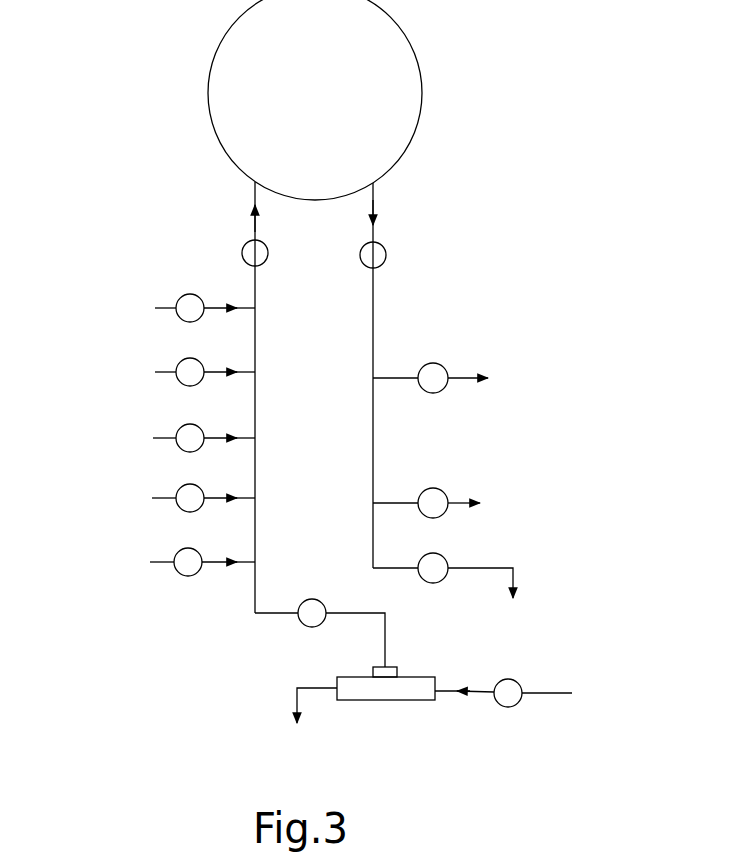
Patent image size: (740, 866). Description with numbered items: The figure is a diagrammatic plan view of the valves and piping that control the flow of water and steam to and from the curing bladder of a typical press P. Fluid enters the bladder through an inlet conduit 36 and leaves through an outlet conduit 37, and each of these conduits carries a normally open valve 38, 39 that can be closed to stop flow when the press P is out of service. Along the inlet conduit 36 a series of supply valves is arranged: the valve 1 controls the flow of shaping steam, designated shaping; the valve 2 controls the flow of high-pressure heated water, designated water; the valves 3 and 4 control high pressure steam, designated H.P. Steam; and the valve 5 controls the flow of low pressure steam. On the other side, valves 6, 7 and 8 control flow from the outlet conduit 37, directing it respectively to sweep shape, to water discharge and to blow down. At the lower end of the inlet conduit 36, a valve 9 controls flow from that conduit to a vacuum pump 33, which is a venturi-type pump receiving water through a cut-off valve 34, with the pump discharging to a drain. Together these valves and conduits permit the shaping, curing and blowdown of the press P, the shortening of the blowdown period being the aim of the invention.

The press P is at (210, 46).
The valve 1 is at (190, 294).
The valve 2 is at (197, 358).
The valve 3 is at (197, 424).
The valve 4 is at (197, 484).
The valve 5 is at (196, 548).
The valve 6 is at (441, 364).
The valve 7 is at (441, 489).
The valve 8 is at (445, 554).
The valve 9 is at (318, 599).
The vacuum pump 33 is at (410, 677).
The cut-off valve 34 is at (515, 706).
The inlet conduit 36 is at (265, 412).
The outlet conduit 37 is at (373, 352).
The valve 38 is at (245, 244).
The valve 39 is at (385, 250).